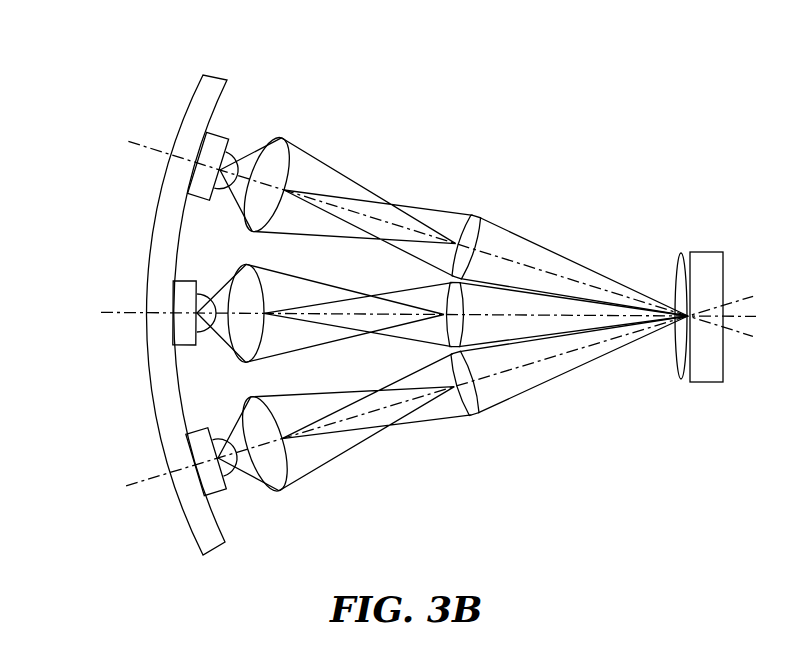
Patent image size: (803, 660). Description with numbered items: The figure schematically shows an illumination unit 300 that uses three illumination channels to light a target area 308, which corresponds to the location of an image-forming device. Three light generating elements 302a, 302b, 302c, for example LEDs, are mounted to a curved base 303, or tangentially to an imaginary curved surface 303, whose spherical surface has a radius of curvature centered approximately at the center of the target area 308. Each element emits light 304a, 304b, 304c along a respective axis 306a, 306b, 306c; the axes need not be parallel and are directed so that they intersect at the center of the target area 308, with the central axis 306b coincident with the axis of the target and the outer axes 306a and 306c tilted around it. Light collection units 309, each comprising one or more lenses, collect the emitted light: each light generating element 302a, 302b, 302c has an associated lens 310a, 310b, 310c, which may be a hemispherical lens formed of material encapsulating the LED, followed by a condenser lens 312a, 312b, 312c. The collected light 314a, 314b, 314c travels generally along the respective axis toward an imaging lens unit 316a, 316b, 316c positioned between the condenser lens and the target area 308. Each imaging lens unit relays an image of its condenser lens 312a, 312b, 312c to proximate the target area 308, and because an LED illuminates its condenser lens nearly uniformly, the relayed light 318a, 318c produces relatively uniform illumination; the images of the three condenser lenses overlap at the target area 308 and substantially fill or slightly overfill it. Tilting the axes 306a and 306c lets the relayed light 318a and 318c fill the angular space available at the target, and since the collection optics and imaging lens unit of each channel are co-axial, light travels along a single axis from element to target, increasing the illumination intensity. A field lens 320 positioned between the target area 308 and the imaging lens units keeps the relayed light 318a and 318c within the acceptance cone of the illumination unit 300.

The illumination unit 300 is at (580, 98).
The curved base 303 is at (212, 556).
The light generating element 302a is at (220, 170).
The light generating element 302b is at (188, 318).
The light generating element 302c is at (218, 458).
The emitted light 304a is at (253, 158).
The emitted light 304b is at (196, 337).
The emitted light 304c is at (258, 488).
The axis 306a is at (130, 141).
The axis 306b is at (115, 312).
The axis 306c is at (128, 483).
The target area 308 is at (682, 253).
The light collection unit 309 is at (293, 113).
The associated lens 310a is at (197, 116).
The associated lens 310b is at (145, 312).
The associated lens 310c is at (235, 497).
The condenser lens 312a is at (285, 136).
The condenser lens 312b is at (245, 263).
The condenser lens 312c is at (290, 494).
The collected light 314a is at (352, 179).
The collected light 314b is at (285, 266).
The collected light 314c is at (368, 440).
The imaging lens unit 316a is at (478, 215).
The imaging lens unit 316b is at (447, 283).
The imaging lens unit 316c is at (478, 414).
The relayed light 318a is at (575, 262).
The relayed light 318c is at (590, 362).
The field lens 320 is at (682, 381).